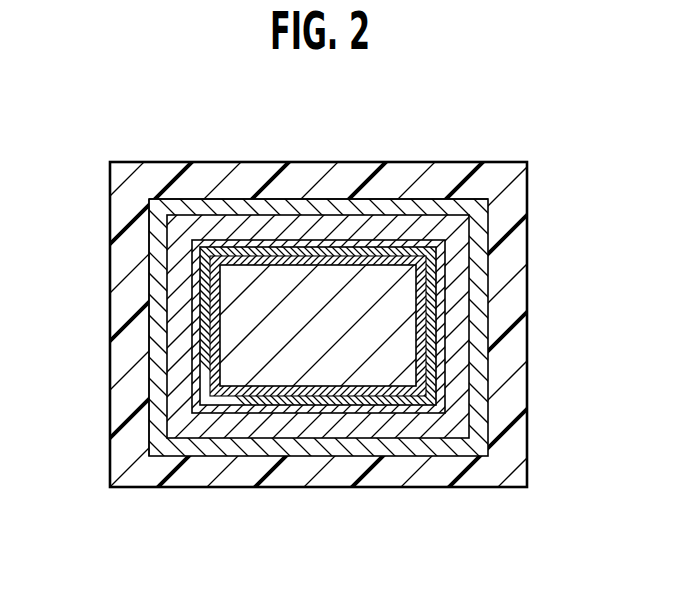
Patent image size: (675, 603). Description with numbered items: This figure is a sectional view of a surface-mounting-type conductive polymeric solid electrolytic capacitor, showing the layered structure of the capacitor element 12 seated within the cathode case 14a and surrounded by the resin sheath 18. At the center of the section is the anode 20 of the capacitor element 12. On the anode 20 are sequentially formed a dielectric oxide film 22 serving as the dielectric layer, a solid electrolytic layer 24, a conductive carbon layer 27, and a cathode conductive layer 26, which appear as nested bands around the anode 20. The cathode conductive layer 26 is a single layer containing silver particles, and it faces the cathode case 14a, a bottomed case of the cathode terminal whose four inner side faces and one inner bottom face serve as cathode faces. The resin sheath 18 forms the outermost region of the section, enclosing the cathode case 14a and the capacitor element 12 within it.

The capacitor element 12 is at (150, 303).
The cathode case 14a is at (373, 210).
The resin sheath 18 is at (506, 450).
The anode 20 is at (380, 375).
The dielectric oxide film 22 is at (428, 370).
The solid electrolytic layer 24 is at (433, 320).
The cathode conductive layer 26 is at (488, 230).
The conductive carbon layer 27 is at (460, 232).